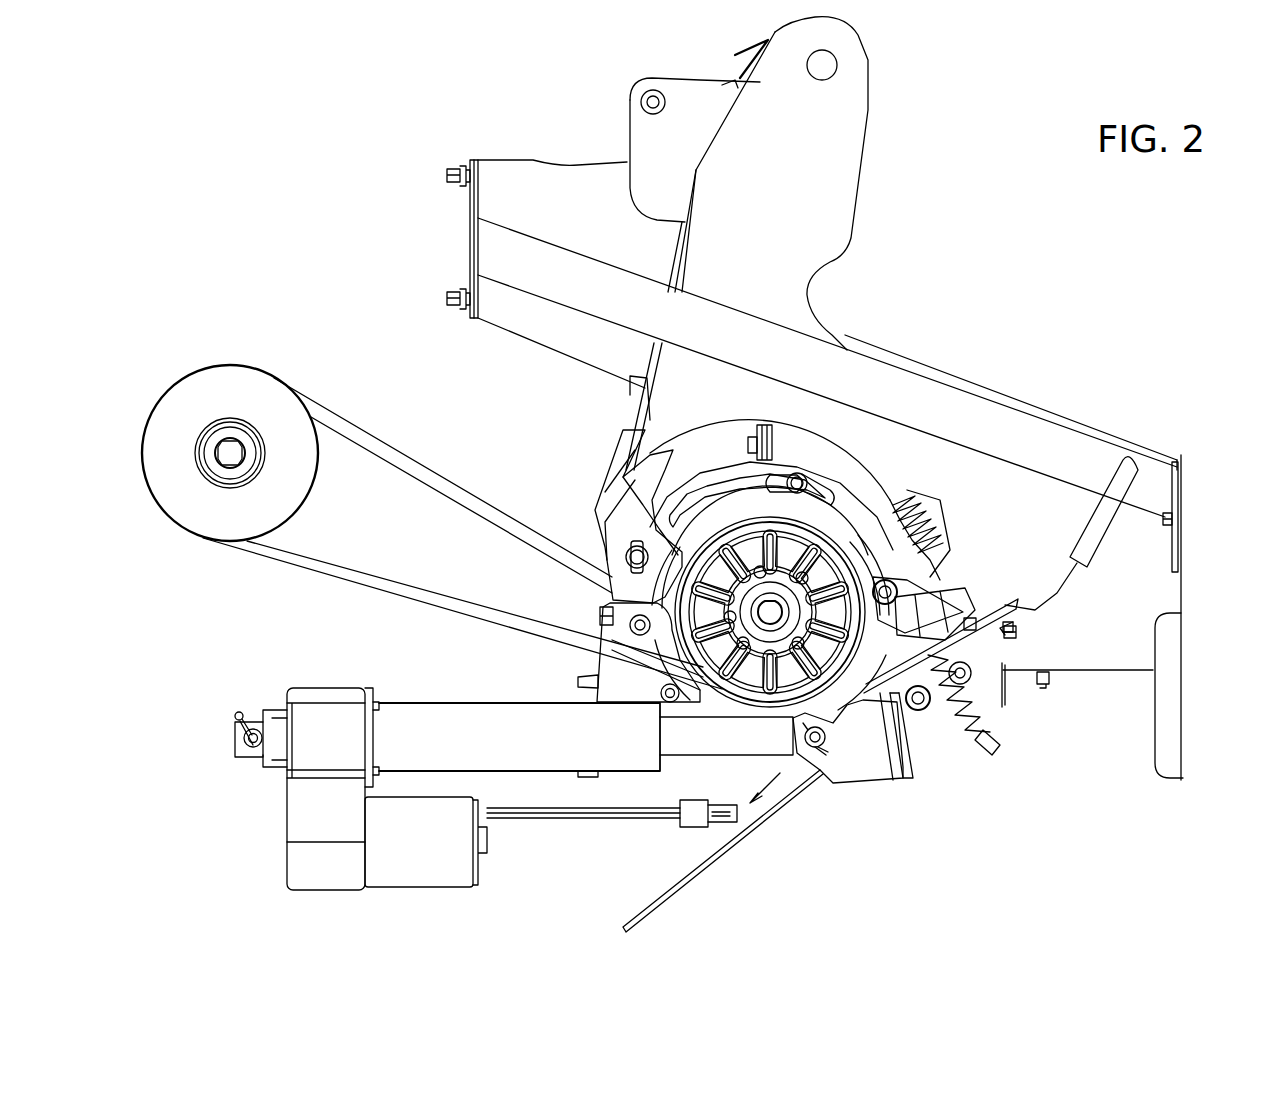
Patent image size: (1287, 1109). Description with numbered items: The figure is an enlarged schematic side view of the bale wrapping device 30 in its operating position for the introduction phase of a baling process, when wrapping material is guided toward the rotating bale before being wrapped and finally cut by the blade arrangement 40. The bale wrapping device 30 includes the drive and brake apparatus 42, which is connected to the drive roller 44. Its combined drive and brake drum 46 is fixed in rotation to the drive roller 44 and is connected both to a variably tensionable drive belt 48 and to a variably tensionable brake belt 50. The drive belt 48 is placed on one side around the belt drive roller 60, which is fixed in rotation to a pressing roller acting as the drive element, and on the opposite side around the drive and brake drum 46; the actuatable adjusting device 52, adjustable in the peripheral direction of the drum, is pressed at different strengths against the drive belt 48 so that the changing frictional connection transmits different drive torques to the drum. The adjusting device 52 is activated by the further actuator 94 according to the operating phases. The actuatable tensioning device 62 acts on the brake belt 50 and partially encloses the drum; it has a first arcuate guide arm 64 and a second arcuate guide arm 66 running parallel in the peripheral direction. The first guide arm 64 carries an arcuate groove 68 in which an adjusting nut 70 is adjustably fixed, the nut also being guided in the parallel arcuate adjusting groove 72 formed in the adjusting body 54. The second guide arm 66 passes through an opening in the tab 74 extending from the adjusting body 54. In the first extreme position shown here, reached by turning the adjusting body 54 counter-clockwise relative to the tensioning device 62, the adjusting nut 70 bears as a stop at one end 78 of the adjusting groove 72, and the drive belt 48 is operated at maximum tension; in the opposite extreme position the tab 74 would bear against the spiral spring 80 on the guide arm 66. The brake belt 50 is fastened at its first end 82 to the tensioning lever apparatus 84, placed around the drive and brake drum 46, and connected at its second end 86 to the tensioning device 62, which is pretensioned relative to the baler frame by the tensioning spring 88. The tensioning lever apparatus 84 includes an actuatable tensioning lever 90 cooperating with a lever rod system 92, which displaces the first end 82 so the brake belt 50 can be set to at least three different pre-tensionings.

The bale wrapping device 30 is at (322, 157).
The blade arrangement 40 is at (790, 780).
The drive and brake apparatus 42 is at (947, 757).
The drive roller 44 is at (770, 616).
The drive and brake drum 46 is at (607, 637).
The drive belt 48 is at (392, 458).
The brake belt 50 is at (612, 490).
The adjusting device 52 is at (667, 433).
The adjusting body 54 is at (613, 468).
The belt drive roller 60 is at (200, 407).
The tensioning device 62 is at (1018, 590).
The first arcuate guide arm 64 is at (910, 500).
The second arcuate guide arm 66 is at (878, 485).
The arcuate groove 68 is at (873, 525).
The adjusting nut 70 is at (797, 473).
The adjusting groove 72 is at (710, 497).
The tab 74 is at (757, 424).
The end of the adjusting groove 78 is at (826, 488).
The spiral spring 80 is at (915, 508).
The first end of the brake belt 82 is at (868, 698).
The tensioning lever apparatus 84 is at (1053, 628).
The second end of the brake belt 86 is at (937, 583).
The tensioning spring 88 is at (983, 713).
The tensioning lever 90 is at (1097, 528).
The lever rod system 92 is at (1007, 637).
The further actuator 94 is at (465, 735).